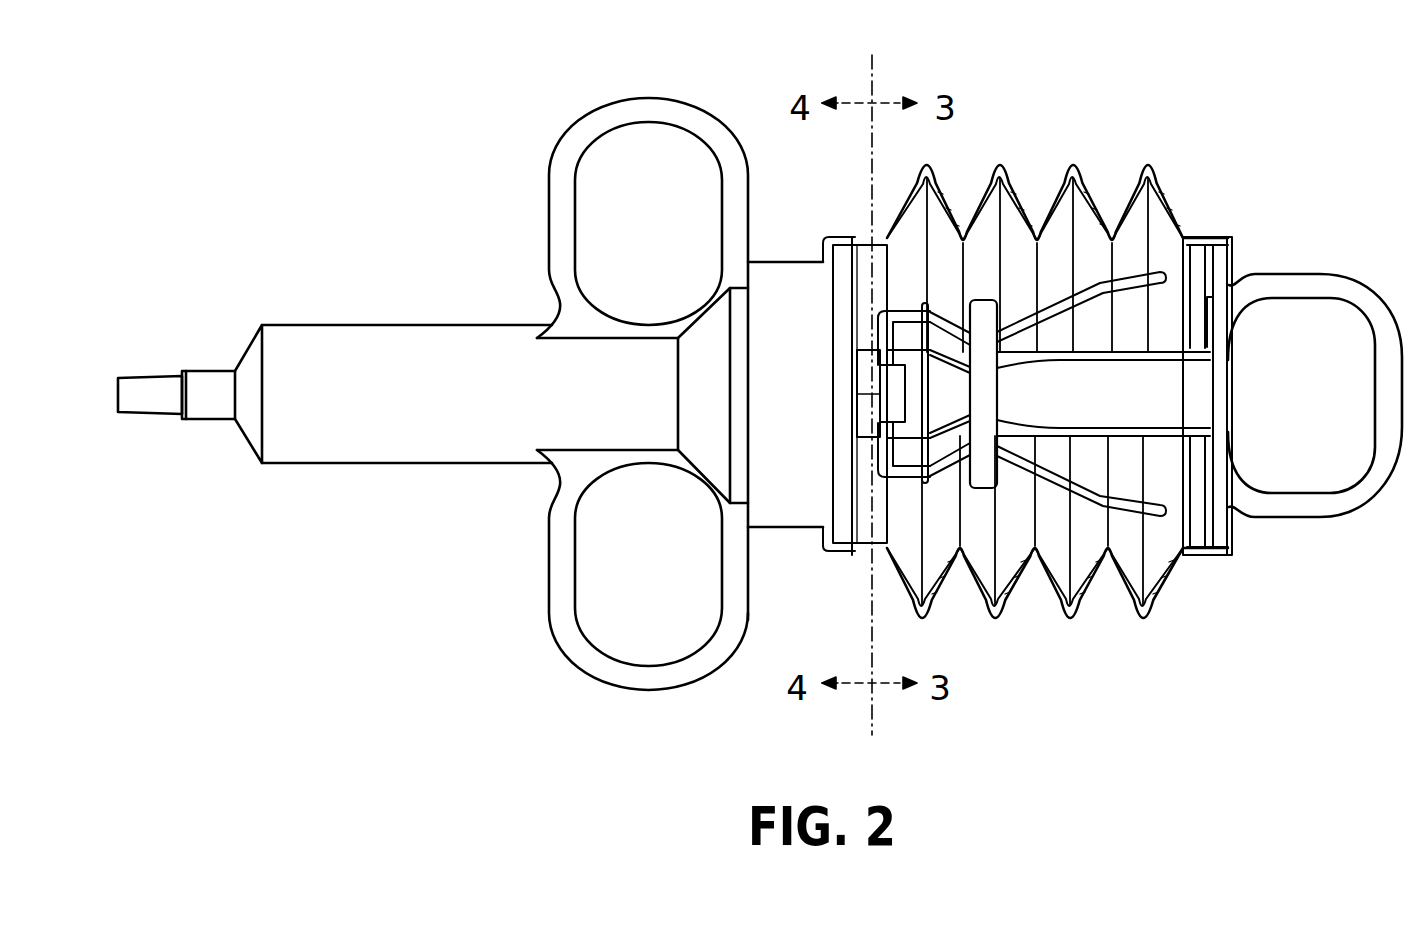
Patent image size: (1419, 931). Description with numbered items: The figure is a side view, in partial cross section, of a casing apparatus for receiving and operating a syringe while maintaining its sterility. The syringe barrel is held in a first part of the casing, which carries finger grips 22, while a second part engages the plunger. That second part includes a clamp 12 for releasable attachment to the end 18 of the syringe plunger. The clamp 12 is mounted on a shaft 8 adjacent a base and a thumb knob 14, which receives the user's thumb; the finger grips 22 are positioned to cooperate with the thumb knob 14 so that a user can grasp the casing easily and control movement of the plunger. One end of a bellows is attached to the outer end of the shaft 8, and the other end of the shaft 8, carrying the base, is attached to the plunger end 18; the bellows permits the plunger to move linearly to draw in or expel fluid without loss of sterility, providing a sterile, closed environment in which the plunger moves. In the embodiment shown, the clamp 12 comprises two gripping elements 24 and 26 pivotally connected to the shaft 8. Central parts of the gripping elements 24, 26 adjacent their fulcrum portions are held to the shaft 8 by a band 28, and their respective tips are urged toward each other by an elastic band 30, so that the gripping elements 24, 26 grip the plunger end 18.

The shaft 8 is at (1110, 415).
The clamp 12 is at (1050, 286).
The thumb knob 14 is at (1332, 288).
The end of the syringe plunger 18 is at (870, 372).
The finger grips 22 is at (652, 110).
The gripping element 24 is at (1012, 480).
The gripping element 26 is at (1018, 300).
The band 28 is at (983, 395).
The elastic band 30 is at (922, 403).